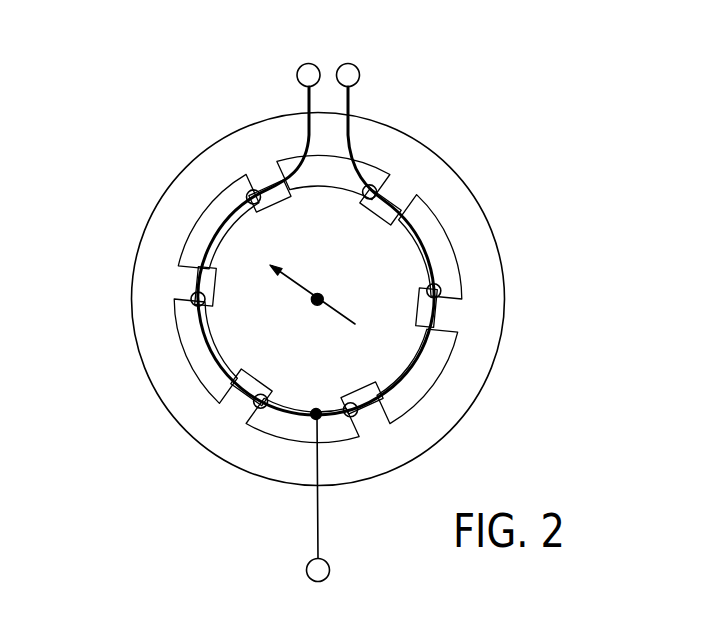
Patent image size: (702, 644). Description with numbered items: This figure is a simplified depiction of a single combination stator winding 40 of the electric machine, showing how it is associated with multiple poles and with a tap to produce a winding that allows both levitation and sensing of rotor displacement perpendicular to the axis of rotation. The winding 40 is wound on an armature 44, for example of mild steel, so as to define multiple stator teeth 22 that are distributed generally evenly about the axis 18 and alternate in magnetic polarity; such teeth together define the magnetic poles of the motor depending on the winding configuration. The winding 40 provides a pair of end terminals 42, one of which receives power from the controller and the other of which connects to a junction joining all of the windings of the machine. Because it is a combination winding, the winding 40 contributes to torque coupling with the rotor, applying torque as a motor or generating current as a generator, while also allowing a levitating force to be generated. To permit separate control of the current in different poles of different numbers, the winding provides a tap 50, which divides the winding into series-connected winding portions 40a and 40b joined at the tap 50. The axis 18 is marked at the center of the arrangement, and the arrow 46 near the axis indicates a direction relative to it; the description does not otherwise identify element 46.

The axis 18 is at (316, 304).
The stator teeth 22 is at (382, 208).
The combination stator winding 40 is at (308, 105).
The winding portion 40a is at (190, 368).
The winding portion 40b is at (413, 367).
The end terminals 42 is at (340, 63).
The armature 44 is at (150, 231).
The rotation direction arrow 46 is at (299, 286).
The tap 50 is at (310, 563).